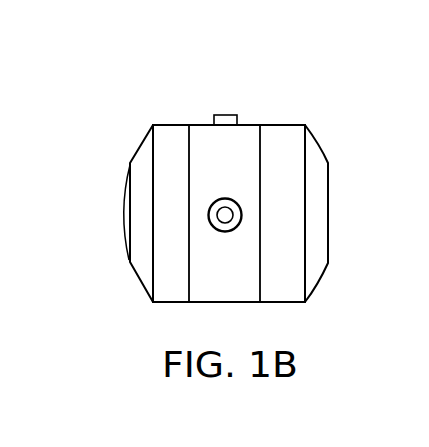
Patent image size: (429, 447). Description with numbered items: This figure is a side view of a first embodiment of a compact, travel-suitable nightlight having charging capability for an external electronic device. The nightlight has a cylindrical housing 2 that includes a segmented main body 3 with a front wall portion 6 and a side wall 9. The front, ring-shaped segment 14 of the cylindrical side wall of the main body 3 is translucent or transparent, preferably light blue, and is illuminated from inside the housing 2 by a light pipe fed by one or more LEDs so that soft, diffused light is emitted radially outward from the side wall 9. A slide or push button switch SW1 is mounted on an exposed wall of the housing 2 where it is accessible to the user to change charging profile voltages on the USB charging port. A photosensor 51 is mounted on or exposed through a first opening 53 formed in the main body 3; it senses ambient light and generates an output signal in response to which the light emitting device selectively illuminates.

The housing 2 is at (172, 124).
The main body 3 is at (230, 302).
The front wall portion 6 is at (140, 148).
The side wall 9 is at (243, 140).
The ring-shaped segment 14 is at (177, 302).
The photosensor 51 is at (230, 221).
The first opening 53 is at (238, 202).
The push button switch SW1 is at (226, 114).